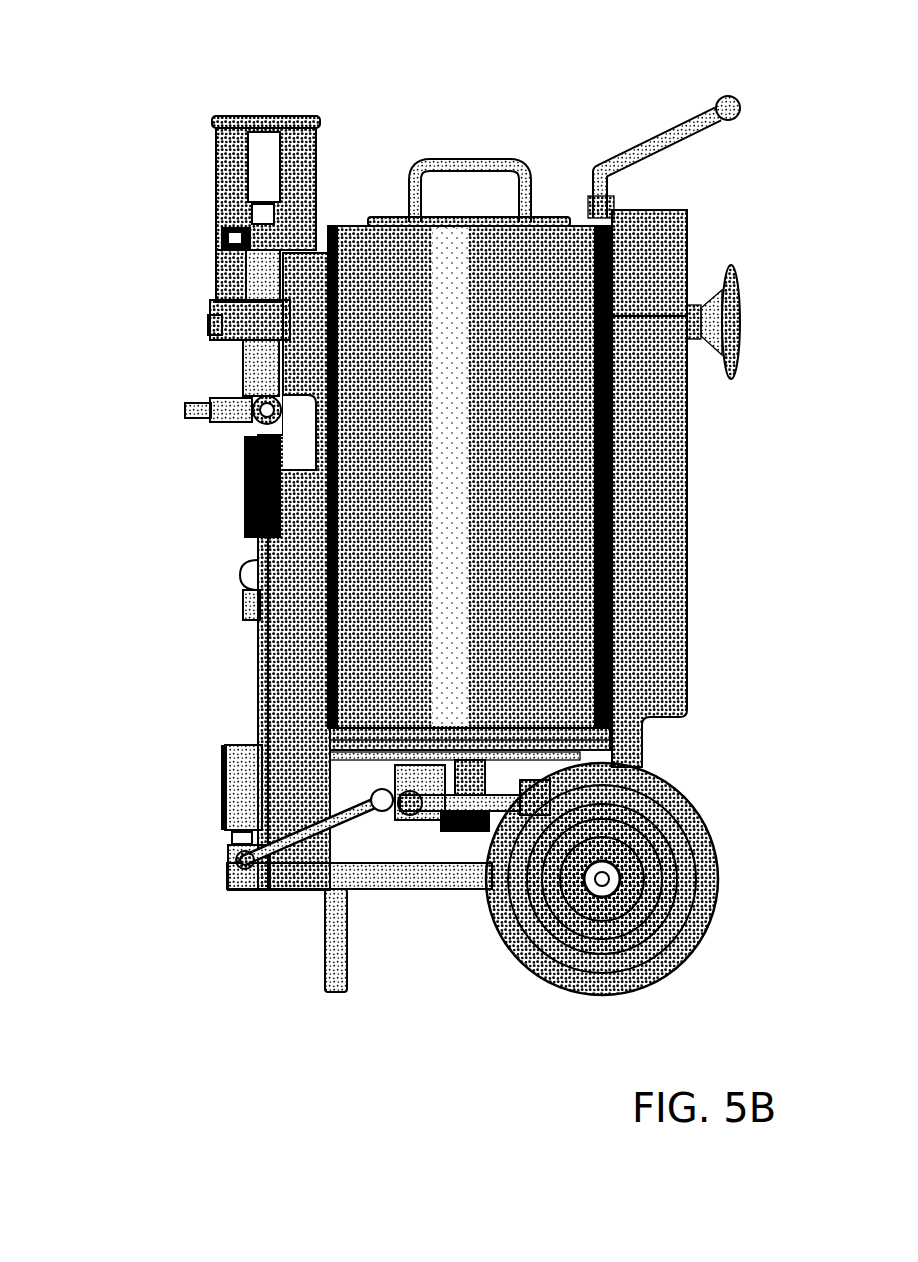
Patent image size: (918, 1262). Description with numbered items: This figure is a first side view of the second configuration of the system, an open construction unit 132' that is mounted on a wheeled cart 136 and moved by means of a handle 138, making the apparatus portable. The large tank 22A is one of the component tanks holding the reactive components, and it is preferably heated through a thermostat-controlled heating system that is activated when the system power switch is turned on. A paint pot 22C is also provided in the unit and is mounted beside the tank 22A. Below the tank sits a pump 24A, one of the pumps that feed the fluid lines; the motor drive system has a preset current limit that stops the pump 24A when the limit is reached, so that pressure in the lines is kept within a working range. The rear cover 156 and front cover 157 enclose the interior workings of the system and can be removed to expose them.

The tank 22A is at (617, 470).
The paint pot 22C is at (258, 112).
The pump 24A is at (398, 822).
The open construction unit 132' is at (261, 890).
The wheeled cart 136 is at (722, 826).
The handle 138 is at (732, 88).
The rear cover 156 is at (665, 572).
The front cover 157 is at (258, 648).